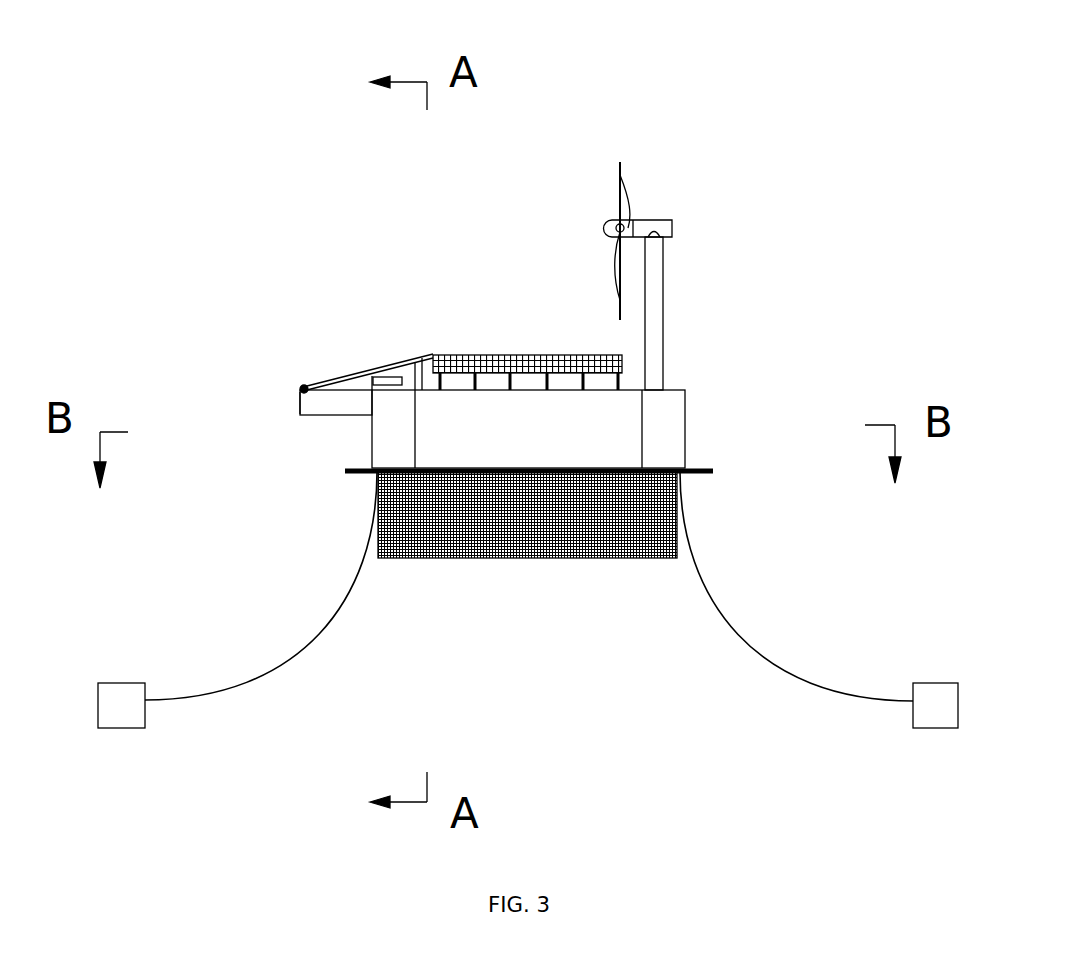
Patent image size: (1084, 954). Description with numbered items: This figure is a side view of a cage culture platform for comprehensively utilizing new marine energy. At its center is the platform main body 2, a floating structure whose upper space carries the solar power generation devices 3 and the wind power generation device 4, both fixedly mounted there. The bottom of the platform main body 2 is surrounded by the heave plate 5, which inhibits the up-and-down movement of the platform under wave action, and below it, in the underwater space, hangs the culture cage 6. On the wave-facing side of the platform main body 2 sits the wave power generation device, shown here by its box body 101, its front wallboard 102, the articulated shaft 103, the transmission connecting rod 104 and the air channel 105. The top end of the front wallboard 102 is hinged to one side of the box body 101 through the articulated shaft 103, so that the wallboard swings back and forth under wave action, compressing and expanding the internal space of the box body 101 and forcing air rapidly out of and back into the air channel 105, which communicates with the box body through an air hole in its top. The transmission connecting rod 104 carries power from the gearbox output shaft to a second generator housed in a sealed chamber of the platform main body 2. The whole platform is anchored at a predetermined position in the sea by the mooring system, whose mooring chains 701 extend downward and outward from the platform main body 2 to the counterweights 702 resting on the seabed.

The platform main body 2 is at (672, 410).
The solar power generation devices 3 is at (483, 360).
The wind power generation device 4 is at (655, 295).
The heave plate 5 is at (693, 471).
The culture cage 6 is at (677, 558).
The mooring chains 701 is at (688, 548).
The counterweights 702 is at (923, 687).
The box body 101 is at (310, 407).
The front wallboard 102 is at (293, 410).
The articulated shaft 103 is at (301, 386).
The transmission connecting rod 104 is at (328, 383).
The air channel 105 is at (340, 380).